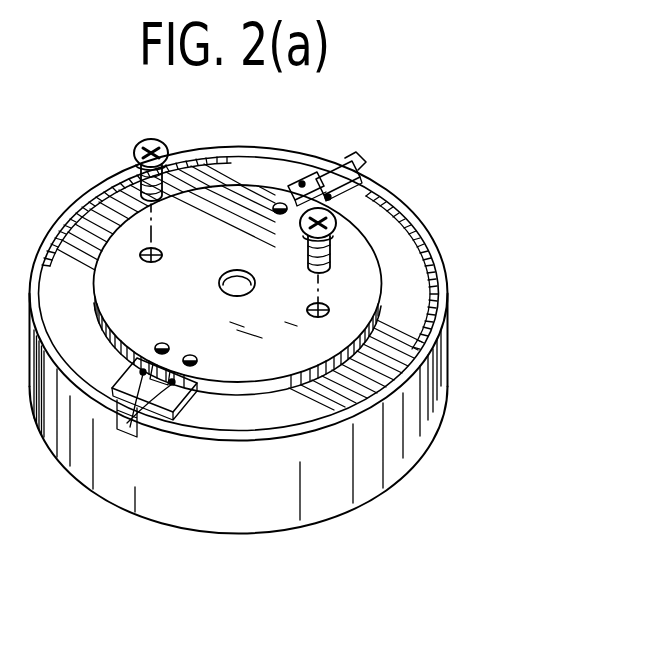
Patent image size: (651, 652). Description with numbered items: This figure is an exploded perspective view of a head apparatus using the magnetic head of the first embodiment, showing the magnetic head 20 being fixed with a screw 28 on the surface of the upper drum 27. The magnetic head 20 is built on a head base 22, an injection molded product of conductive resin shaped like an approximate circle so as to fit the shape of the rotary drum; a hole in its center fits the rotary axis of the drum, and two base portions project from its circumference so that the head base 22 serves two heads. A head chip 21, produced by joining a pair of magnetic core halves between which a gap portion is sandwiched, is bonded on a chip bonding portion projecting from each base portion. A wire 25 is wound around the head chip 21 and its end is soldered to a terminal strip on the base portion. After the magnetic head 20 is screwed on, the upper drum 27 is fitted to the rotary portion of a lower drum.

The magnetic head 20 is at (240, 392).
The head chip 21 is at (356, 162).
The head base 22 is at (362, 301).
The wire 25 is at (303, 170).
The upper drum 27 is at (440, 389).
The screw 28 is at (134, 150).